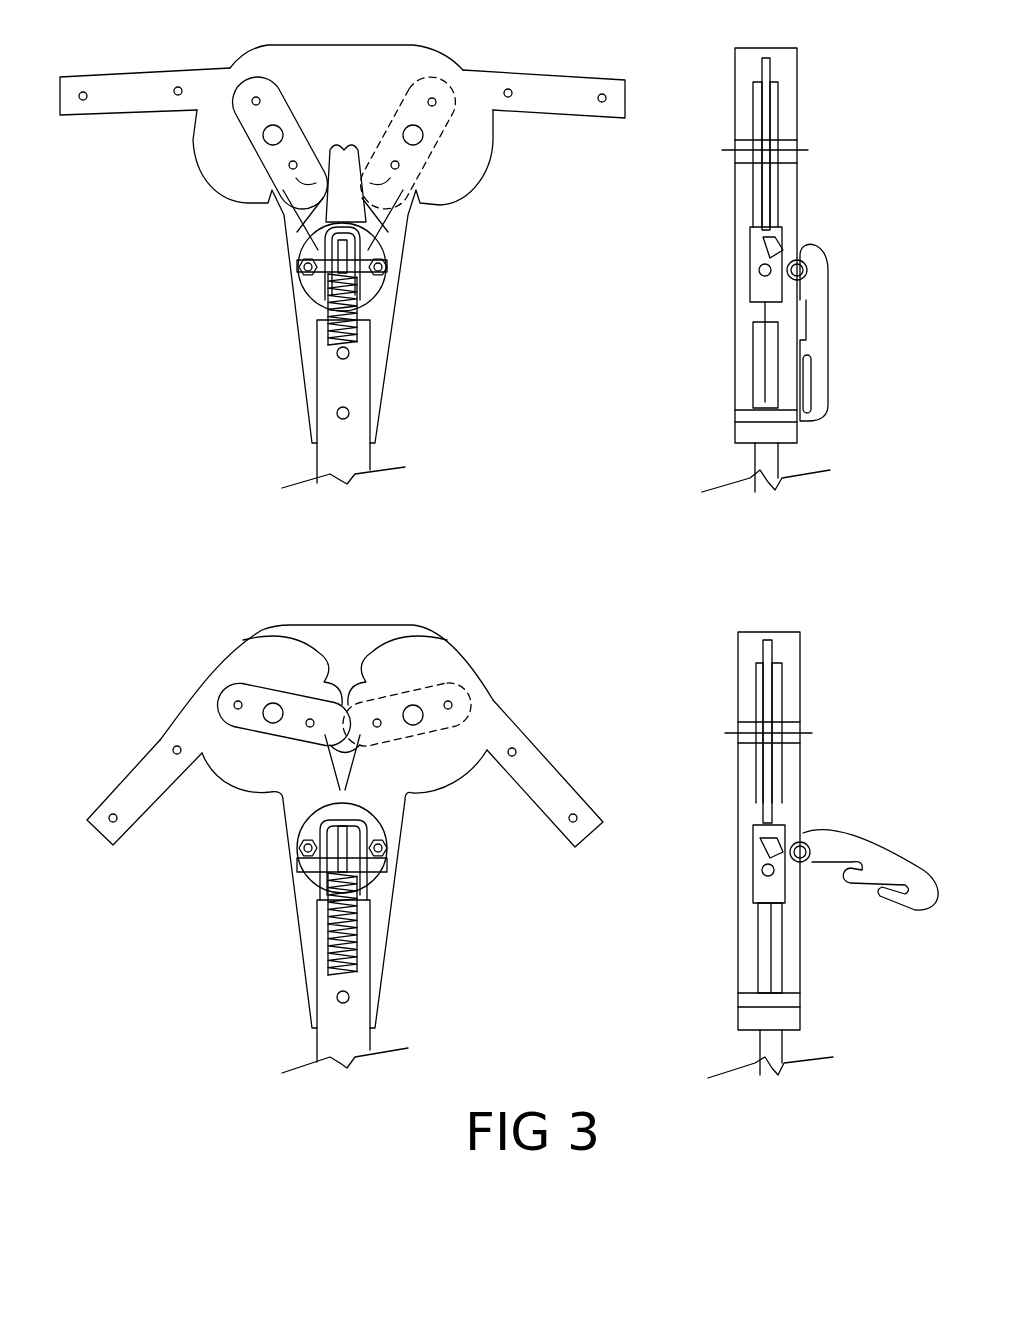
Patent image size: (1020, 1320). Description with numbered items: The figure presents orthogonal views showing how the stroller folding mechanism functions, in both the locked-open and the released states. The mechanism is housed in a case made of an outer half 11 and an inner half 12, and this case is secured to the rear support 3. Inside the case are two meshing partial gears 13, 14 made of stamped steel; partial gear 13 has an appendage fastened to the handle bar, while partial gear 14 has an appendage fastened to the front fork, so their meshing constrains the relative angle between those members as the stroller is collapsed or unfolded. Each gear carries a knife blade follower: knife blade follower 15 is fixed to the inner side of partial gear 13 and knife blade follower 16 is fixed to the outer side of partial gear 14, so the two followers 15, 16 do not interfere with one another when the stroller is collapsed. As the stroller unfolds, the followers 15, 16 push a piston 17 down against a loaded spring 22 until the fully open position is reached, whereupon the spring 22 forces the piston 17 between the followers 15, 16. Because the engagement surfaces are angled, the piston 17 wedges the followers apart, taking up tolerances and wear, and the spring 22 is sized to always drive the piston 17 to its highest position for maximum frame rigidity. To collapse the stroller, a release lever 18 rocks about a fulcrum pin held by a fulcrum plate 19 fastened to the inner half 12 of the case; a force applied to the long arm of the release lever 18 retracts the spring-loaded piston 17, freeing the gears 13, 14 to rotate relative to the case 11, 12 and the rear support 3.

The rear support 3 is at (333, 427).
The outer half of case 11 is at (750, 60).
The inner half of case 12 is at (787, 60).
The partial gear 13 is at (545, 97).
The partial gear 14 is at (135, 93).
The knife blade follower 15 is at (380, 213).
The knife blade follower 16 is at (317, 215).
The piston 17 is at (318, 258).
The release lever 18 is at (817, 300).
The fulcrum plate 19 is at (372, 290).
The spring 22 is at (330, 335).